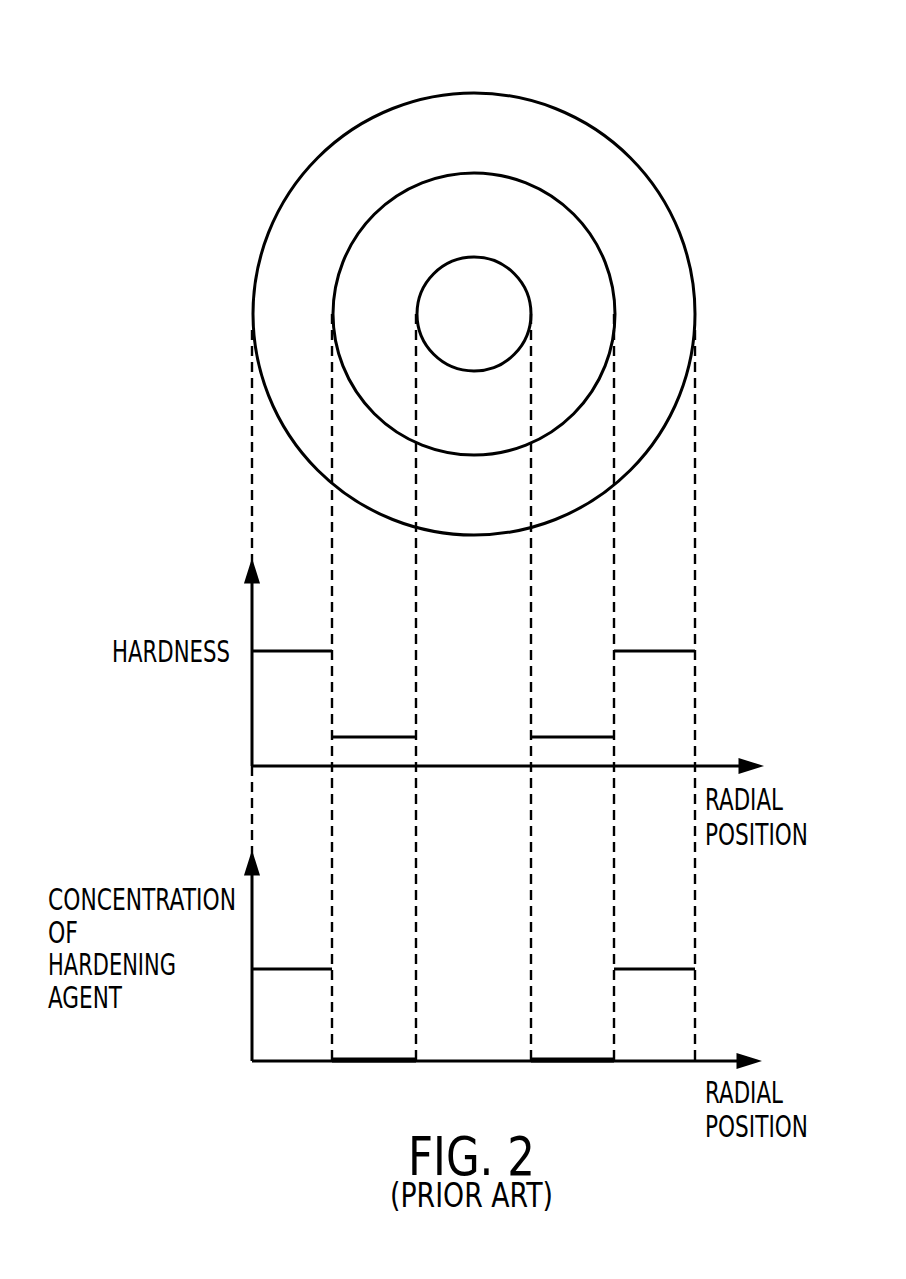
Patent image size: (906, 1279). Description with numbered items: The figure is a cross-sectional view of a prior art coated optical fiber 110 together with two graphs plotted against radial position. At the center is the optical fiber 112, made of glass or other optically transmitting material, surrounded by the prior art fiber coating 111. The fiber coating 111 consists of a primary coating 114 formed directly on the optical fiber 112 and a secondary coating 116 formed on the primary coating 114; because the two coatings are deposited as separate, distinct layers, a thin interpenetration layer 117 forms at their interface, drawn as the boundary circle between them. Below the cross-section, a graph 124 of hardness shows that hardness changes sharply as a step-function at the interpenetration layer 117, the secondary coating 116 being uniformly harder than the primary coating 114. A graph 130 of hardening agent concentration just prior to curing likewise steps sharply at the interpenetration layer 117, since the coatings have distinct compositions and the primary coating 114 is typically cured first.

The coated optical fiber 110 is at (496, 269).
The fiber coating 111 is at (415, 98).
The optical fiber 112 is at (493, 330).
The primary coating 114 is at (536, 314).
The secondary coating 116 is at (474, 275).
The interpenetration layer 117 is at (616, 312).
The graph of hardness 124 is at (653, 651).
The graph of concentration of a hardening agent 130 is at (651, 970).